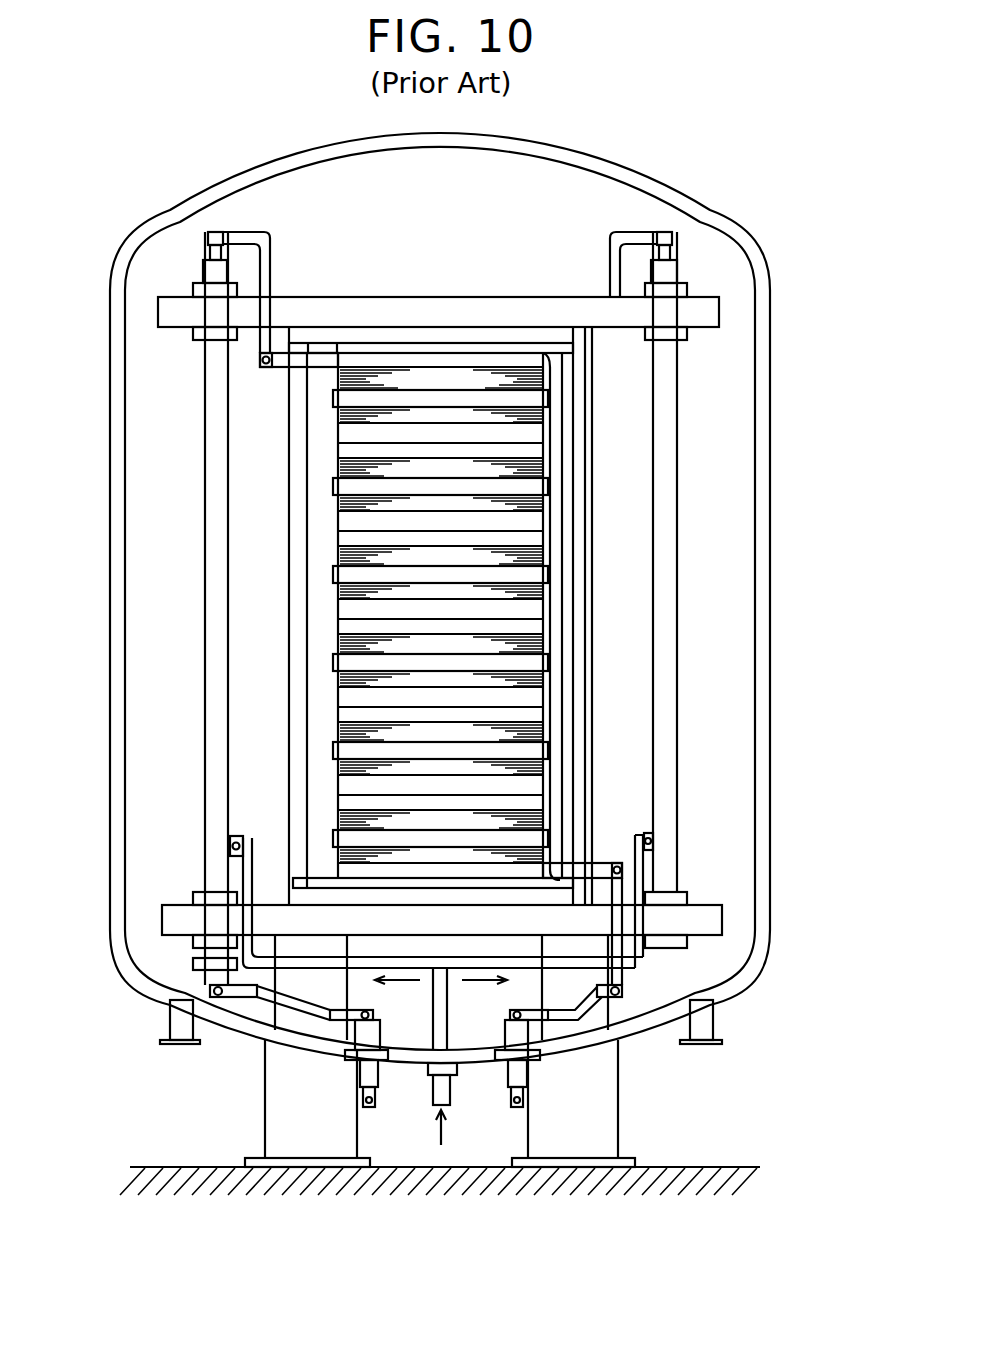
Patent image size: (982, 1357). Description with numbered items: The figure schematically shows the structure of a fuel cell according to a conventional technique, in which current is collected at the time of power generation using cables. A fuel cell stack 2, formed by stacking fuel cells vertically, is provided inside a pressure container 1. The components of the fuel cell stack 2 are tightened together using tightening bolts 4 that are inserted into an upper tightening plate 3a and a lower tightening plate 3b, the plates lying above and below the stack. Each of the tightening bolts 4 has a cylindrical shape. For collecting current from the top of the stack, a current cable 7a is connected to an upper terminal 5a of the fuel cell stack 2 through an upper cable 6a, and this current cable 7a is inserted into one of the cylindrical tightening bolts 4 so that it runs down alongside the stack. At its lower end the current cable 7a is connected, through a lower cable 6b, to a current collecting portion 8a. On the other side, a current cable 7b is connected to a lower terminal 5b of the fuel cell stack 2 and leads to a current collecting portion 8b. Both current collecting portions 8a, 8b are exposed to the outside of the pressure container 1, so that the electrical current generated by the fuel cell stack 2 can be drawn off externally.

The pressure container 1 is at (765, 380).
The fuel cell stack 2 is at (560, 560).
The upper tightening plate 3a is at (705, 315).
The lower tightening plate 3b is at (712, 912).
The tightening bolts 4 is at (213, 502).
The upper terminal 5a is at (268, 370).
The lower terminal 5b is at (625, 864).
The upper cable 6a is at (270, 244).
The lower cable 6b is at (268, 1000).
The current cable 7a is at (205, 248).
The current cable 7b is at (622, 985).
The current collecting portion 8a is at (373, 1040).
The current collecting portion 8b is at (517, 1078).